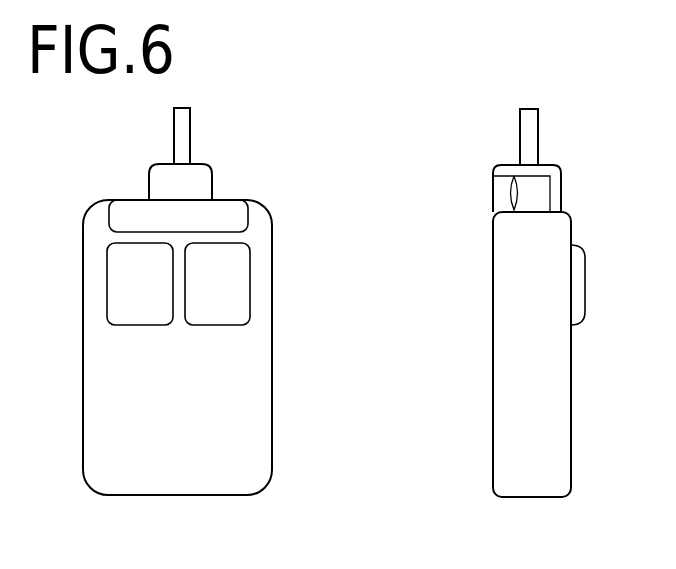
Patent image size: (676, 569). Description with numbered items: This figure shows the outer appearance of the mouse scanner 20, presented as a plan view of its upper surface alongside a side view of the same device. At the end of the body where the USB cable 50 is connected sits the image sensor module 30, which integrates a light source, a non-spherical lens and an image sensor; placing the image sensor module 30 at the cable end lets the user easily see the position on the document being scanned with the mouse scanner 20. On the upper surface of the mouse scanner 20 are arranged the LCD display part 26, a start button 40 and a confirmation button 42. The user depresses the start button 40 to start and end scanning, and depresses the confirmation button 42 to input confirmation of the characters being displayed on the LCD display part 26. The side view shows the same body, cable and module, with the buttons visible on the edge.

The mouse scanner 20 is at (529, 499).
The LCD display part 26 is at (249, 218).
The image sensor module 30 is at (214, 193).
The start button 40 is at (582, 291).
The confirmation button 42 is at (250, 288).
The USB cable 50 is at (519, 141).